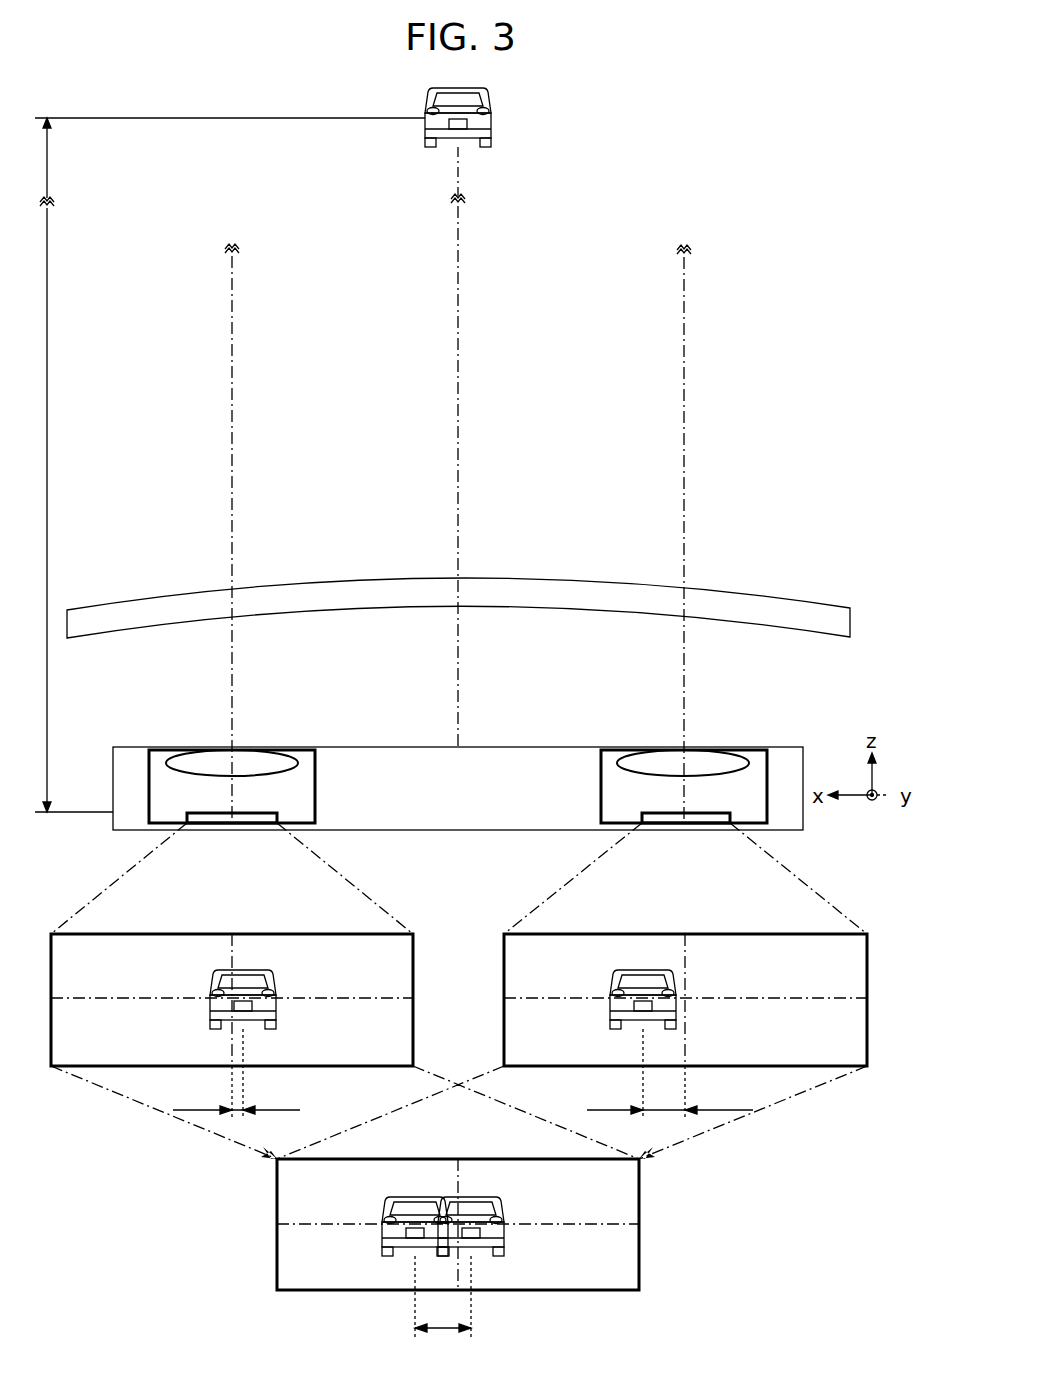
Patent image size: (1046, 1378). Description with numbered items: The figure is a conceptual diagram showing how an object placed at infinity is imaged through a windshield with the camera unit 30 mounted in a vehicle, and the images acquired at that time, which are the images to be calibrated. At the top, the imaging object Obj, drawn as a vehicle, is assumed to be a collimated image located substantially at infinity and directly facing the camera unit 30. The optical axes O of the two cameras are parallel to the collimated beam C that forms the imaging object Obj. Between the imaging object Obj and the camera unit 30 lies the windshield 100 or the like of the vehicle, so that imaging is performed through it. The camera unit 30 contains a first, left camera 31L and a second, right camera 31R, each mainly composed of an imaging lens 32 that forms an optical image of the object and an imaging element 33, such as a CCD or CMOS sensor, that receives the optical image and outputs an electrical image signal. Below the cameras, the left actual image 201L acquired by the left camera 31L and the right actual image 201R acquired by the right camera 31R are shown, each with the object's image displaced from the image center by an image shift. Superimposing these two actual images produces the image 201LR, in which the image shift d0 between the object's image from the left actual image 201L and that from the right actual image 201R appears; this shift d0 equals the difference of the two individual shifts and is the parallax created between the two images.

The imaging object Obj is at (492, 118).
The optical axis O is at (232, 292).
The collimated beam C is at (458, 256).
The windshield 100 is at (785, 608).
The camera unit 30 is at (793, 748).
The first camera 31L is at (160, 755).
The second camera 31R is at (610, 753).
The imaging lens 32 is at (277, 775).
The imaging element 33 is at (271, 813).
The left actual image 201L is at (442, 936).
The right actual image 201R is at (868, 942).
The superimposed image 201LR is at (640, 1183).
The image shift d0 is at (443, 1296).